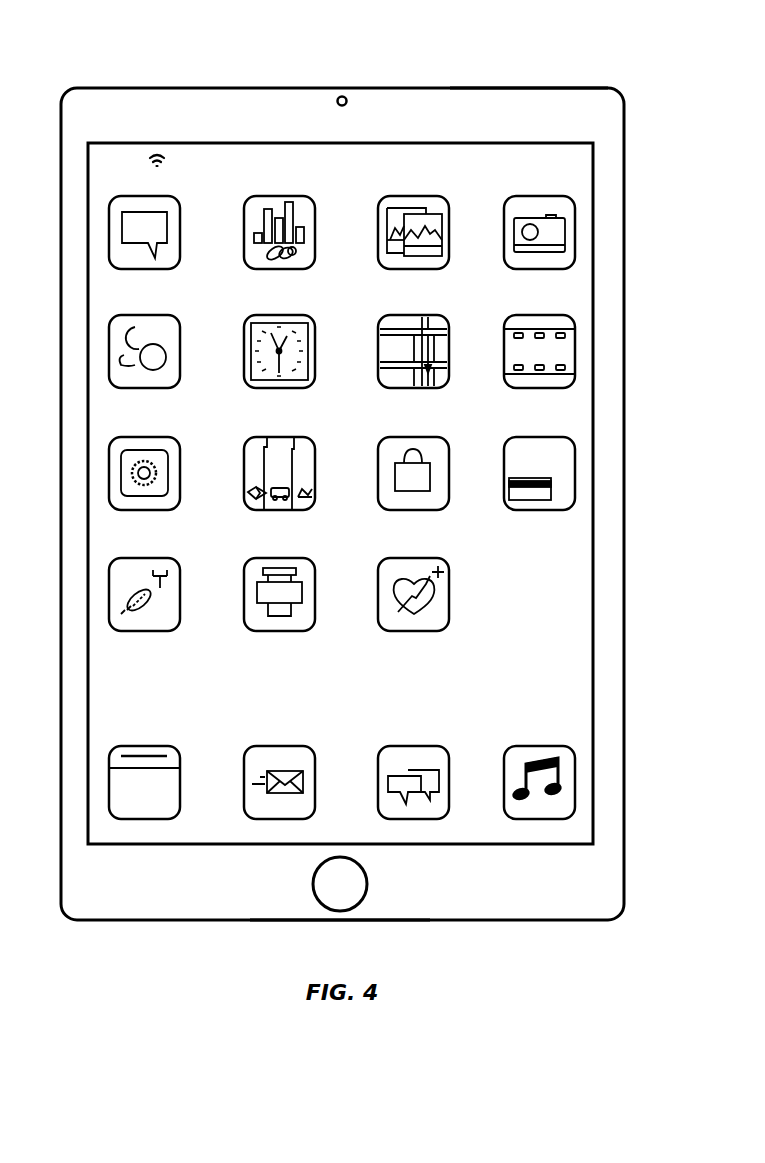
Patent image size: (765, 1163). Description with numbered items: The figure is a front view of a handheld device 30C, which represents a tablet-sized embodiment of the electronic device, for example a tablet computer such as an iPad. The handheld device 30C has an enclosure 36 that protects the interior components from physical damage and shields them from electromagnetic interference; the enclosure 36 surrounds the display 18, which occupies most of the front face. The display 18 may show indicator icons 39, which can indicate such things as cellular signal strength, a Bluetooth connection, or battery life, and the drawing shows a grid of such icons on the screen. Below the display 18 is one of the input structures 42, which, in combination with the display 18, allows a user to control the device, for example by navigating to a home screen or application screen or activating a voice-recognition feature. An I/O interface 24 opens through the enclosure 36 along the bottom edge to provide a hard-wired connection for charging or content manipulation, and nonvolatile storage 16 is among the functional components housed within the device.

The handheld device 30C is at (70, 46).
The nonvolatile storage 16 is at (110, 88).
The enclosure 36 is at (556, 88).
The display 18 is at (594, 560).
The indicator icons 39 is at (345, 200).
The input structures 42 is at (368, 884).
The I/O interface 24 is at (340, 921).